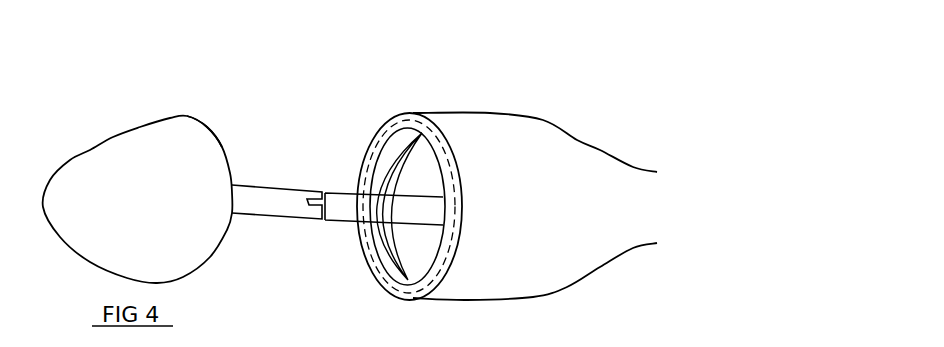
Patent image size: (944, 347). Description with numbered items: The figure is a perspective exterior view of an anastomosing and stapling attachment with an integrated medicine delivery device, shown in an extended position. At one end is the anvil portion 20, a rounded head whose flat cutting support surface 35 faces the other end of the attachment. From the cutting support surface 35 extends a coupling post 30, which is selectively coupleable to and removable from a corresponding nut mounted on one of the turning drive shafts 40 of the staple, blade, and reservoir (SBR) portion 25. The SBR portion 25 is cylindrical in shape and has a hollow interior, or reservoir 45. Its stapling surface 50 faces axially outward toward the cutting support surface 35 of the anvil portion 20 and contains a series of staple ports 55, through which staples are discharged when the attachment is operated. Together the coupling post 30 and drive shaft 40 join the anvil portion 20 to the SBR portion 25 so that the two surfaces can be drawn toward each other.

The anvil portion 20 is at (93, 150).
The staple, blade, and reservoir (SBR) portion 25 is at (547, 120).
The coupling post 30 is at (252, 184).
The flat cutting support surface 35 is at (210, 127).
The turning drive shaft 40 is at (337, 222).
The reservoir 45 is at (413, 177).
The stapling surface 50 is at (404, 113).
The staple ports 55 is at (430, 123).